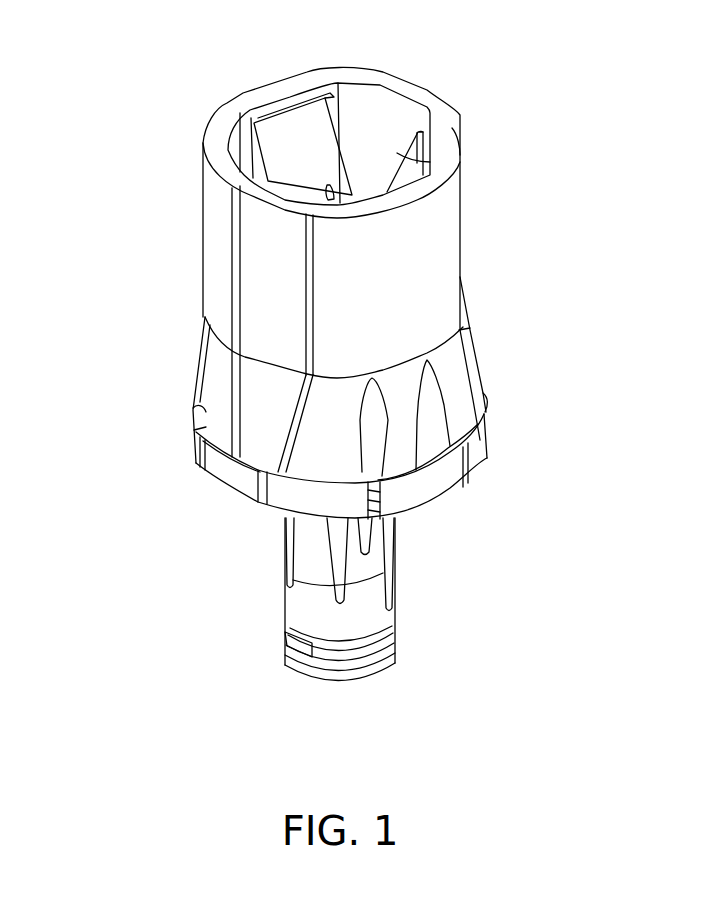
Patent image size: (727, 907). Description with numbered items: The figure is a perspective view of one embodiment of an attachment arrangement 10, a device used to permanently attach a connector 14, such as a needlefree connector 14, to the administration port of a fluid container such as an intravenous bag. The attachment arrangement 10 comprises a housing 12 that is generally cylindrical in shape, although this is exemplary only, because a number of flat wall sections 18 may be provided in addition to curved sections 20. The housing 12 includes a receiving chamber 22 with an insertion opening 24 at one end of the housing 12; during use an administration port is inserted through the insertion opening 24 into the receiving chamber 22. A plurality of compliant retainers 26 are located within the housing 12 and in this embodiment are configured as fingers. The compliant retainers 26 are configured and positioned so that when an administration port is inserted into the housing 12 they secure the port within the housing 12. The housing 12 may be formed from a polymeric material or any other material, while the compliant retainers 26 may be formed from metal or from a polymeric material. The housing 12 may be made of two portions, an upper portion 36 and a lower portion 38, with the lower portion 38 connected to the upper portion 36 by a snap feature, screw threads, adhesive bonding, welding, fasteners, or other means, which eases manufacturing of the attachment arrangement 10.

The attachment arrangement 10 is at (297, 340).
The housing 12 is at (447, 243).
The connector 14 is at (283, 603).
The flat wall section 18 is at (284, 110).
The curved section 20 is at (370, 98).
The receiving chamber 22 is at (392, 136).
The insertion opening 24 is at (430, 162).
The compliant retainer 26 is at (278, 141).
The upper portion 36 is at (460, 378).
The lower portion 38 is at (477, 452).